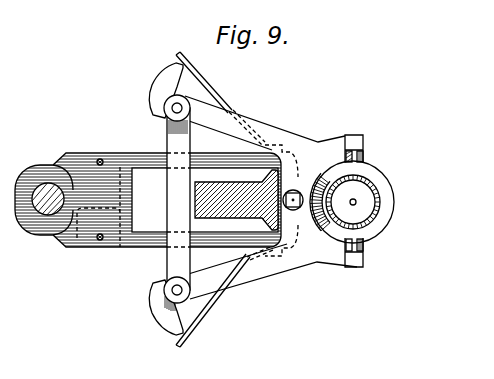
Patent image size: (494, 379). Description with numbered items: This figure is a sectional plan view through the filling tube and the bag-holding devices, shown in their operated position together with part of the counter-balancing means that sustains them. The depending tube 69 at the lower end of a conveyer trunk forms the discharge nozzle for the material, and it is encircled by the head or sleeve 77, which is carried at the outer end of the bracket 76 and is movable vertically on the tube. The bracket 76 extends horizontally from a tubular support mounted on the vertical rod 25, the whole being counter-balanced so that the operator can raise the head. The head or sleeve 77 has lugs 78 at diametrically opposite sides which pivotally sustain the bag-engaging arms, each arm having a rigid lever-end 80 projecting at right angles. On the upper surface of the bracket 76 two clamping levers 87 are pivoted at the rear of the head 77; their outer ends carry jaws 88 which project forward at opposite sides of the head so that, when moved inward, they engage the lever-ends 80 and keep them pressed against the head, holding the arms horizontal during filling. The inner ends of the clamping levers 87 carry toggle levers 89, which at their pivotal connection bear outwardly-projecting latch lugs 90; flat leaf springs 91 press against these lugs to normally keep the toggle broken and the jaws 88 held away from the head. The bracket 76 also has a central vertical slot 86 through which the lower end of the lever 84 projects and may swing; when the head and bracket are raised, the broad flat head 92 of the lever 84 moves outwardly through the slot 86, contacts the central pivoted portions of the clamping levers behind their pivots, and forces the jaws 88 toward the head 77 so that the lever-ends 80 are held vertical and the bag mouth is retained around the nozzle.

The vertical rod 25 is at (38, 213).
The depending tube 69 is at (342, 222).
The bracket 76 is at (177, 217).
The head or sleeve 77 is at (368, 239).
The lugs 78 is at (348, 151).
The lever-end 80 is at (360, 150).
The lever 84 is at (233, 208).
The central vertical opening or slot 86 is at (205, 200).
The clamping levers 87 is at (264, 126).
The jaws 88 is at (348, 134).
The toggle levers 89 is at (175, 138).
The latch lugs 90 is at (160, 83).
The flat leaf springs 91 is at (207, 86).
The broad flat head 92 is at (241, 270).